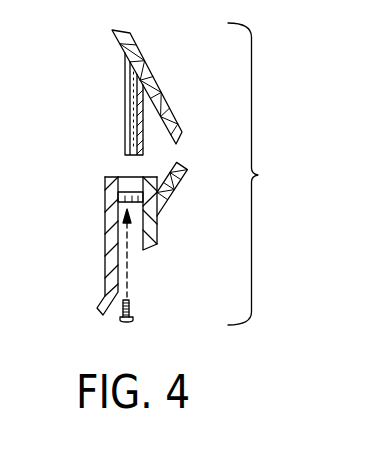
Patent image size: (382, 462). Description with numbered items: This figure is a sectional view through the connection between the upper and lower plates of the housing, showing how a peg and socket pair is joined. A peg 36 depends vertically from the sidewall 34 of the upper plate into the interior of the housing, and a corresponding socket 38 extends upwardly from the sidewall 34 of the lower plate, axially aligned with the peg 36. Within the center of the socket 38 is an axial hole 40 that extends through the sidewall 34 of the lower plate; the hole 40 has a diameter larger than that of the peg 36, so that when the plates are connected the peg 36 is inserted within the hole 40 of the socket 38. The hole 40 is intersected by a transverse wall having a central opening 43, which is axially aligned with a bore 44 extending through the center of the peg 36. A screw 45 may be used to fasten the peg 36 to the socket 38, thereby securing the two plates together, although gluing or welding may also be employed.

The sidewall 34 is at (157, 88).
The peg 36 is at (125, 102).
The socket 38 is at (105, 213).
The axial hole 40 is at (137, 256).
The central opening 43 is at (118, 192).
The bore 44 is at (133, 147).
The screw 45 is at (135, 318).